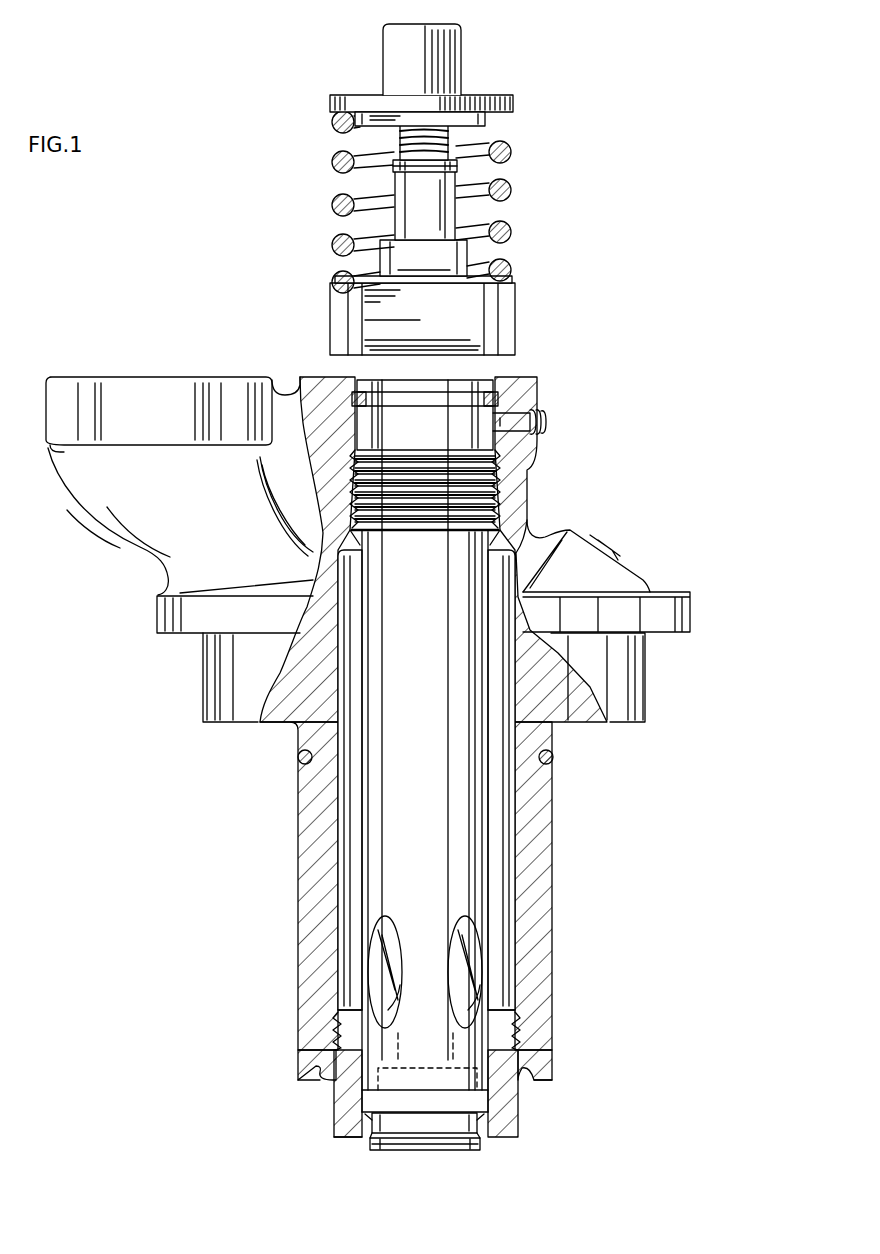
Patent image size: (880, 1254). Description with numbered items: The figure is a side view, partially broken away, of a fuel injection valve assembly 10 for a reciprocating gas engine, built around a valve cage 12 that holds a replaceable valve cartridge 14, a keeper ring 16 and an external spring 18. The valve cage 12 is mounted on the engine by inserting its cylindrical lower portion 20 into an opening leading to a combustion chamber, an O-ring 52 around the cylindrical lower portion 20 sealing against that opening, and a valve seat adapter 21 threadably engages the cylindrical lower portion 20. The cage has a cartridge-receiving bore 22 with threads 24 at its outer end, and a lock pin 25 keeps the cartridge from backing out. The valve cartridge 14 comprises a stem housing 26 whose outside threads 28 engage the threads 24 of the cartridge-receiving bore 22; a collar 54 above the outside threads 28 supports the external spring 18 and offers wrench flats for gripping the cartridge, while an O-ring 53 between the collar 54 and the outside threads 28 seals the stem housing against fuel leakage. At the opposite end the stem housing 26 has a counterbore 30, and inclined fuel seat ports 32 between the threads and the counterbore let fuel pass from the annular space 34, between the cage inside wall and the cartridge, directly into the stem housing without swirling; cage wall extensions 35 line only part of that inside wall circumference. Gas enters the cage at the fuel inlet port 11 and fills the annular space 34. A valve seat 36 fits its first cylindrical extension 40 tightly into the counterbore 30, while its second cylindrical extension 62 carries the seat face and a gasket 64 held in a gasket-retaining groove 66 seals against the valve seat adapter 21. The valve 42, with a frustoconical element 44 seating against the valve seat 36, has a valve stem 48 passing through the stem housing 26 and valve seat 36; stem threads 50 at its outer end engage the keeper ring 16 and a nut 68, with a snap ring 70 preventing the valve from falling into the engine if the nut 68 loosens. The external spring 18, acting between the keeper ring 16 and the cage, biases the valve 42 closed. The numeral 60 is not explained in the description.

The fuel injection valve assembly 10 is at (640, 100).
The fuel inlet port 11 is at (205, 377).
The valve cage 12 is at (535, 507).
The valve cartridge 14 is at (358, 795).
The keeper ring 16 is at (513, 100).
The external spring 18 is at (511, 190).
The cylindrical lower portion 20 is at (552, 847).
The valve seat adapter 21 is at (334, 1060).
The cartridge-receiving bore 22 is at (548, 530).
The threads 24 is at (500, 468).
The lock pin 25 is at (546, 424).
The stem housing 26 is at (485, 678).
The outside threads 28 is at (500, 492).
The counterbore 30 is at (520, 1087).
The fuel seat ports 32 is at (480, 958).
The annular space 34 is at (500, 914).
The cage wall extensions 35 is at (352, 866).
The valve seat 36 is at (515, 1100).
The first cylindrical extension 40 is at (333, 1088).
The valve 42 is at (360, 1151).
The frustoconical element 44 is at (393, 1152).
The valve stem 48 is at (445, 220).
The stem threads 50 is at (440, 140).
The O-ring 52 is at (553, 757).
The O-ring 53 is at (498, 398).
The collar 54 is at (515, 330).
The adjusting nut 60 is at (467, 258).
The second cylindrical extension 62 is at (340, 1137).
The gasket 64 is at (518, 1118).
The gasket-retaining groove 66 is at (518, 1130).
The nut 68 is at (461, 62).
The snap ring 70 is at (457, 166).